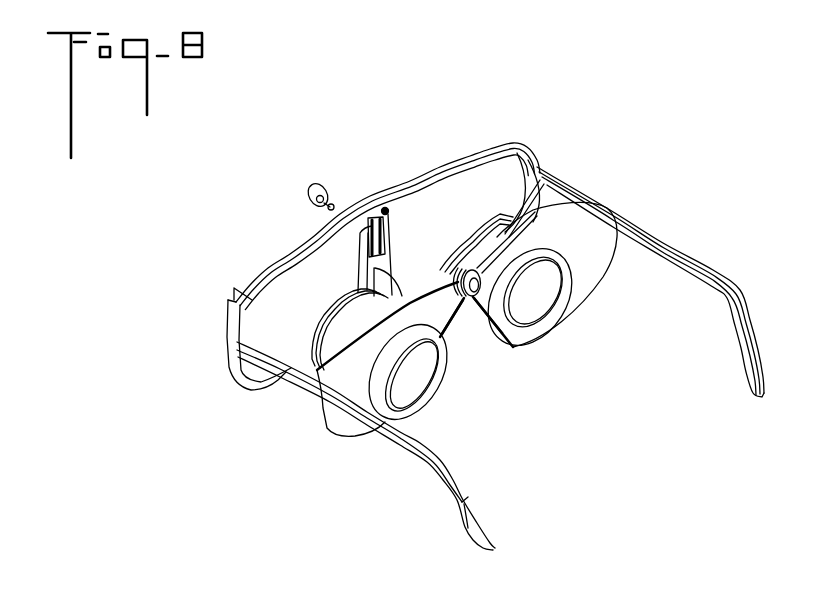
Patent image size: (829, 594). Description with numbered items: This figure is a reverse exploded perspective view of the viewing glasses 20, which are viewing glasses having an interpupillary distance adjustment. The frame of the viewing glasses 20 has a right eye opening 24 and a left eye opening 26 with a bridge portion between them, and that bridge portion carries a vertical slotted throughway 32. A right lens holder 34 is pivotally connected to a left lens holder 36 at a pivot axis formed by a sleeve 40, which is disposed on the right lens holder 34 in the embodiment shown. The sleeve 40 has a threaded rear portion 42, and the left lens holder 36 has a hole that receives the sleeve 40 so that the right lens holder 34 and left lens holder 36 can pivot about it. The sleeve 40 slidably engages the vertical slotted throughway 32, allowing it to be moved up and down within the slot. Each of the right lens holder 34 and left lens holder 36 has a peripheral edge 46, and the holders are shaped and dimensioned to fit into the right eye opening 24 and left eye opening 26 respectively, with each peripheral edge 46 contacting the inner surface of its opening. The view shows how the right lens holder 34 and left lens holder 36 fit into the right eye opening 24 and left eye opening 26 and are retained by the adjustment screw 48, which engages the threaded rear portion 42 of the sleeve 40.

The viewing glasses 20 is at (676, 129).
The right eye opening 24 is at (496, 192).
The left eye opening 26 is at (288, 318).
The vertical slotted throughway 32 is at (383, 240).
The right lens holder 34 is at (590, 275).
The left lens holder 36 is at (337, 422).
The sleeve 40 is at (445, 282).
The threaded rear portion 42 is at (472, 298).
The peripheral edge 46 is at (447, 323).
The adjustment screw 48 is at (305, 191).